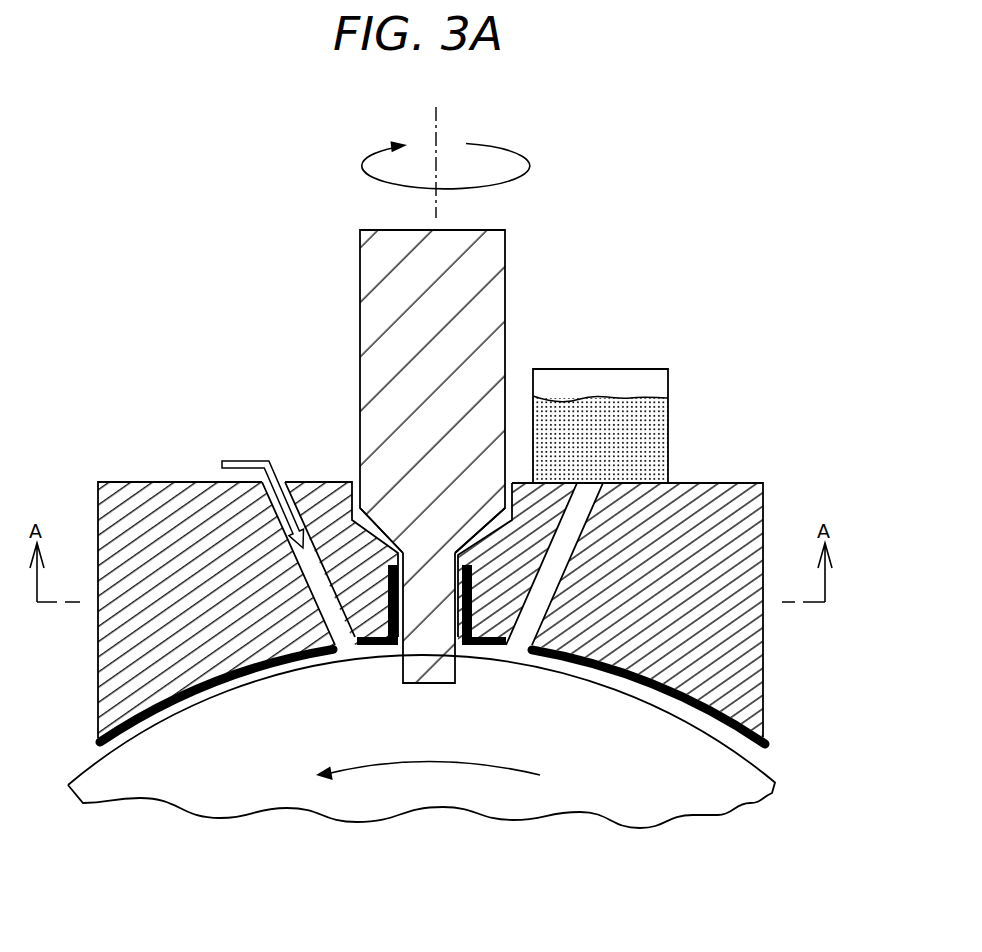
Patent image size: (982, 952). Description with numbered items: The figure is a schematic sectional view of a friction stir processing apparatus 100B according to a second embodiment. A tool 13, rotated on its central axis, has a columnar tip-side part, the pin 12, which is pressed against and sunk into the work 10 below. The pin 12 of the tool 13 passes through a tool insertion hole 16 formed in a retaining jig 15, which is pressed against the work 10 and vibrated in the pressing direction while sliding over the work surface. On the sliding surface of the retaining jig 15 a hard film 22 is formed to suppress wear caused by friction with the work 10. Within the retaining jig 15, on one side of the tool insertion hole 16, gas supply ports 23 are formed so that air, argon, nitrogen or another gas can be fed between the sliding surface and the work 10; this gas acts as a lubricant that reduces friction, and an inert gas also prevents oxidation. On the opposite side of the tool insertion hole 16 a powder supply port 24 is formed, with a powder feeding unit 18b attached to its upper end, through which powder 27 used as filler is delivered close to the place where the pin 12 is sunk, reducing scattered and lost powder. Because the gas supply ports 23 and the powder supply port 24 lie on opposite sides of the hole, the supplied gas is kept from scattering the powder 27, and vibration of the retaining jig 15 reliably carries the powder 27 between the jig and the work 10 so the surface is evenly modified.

The friction stir processing apparatus 100B is at (739, 243).
The work 10 is at (730, 790).
The pin 12 is at (415, 663).
The tool 13 is at (372, 273).
The retaining jig 15 is at (731, 497).
The tool insertion hole 16 is at (405, 582).
The powder feeding unit 18b is at (592, 378).
The hard film 22 is at (703, 707).
The gas supply ports 23 is at (318, 578).
The powder supply port 24 is at (582, 502).
The powder 27 is at (607, 408).